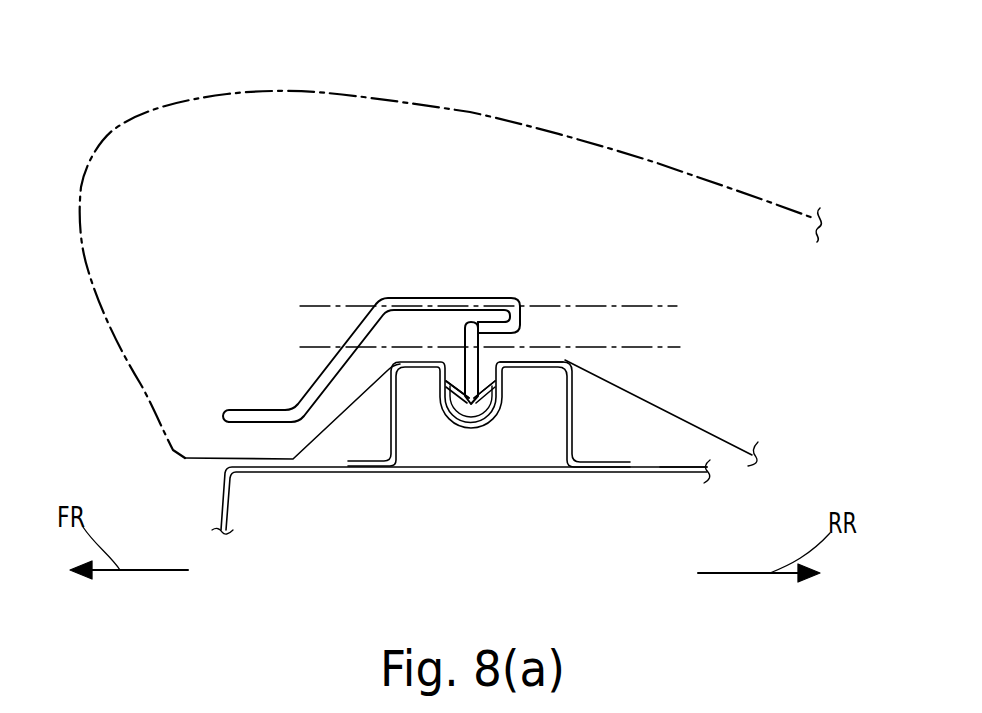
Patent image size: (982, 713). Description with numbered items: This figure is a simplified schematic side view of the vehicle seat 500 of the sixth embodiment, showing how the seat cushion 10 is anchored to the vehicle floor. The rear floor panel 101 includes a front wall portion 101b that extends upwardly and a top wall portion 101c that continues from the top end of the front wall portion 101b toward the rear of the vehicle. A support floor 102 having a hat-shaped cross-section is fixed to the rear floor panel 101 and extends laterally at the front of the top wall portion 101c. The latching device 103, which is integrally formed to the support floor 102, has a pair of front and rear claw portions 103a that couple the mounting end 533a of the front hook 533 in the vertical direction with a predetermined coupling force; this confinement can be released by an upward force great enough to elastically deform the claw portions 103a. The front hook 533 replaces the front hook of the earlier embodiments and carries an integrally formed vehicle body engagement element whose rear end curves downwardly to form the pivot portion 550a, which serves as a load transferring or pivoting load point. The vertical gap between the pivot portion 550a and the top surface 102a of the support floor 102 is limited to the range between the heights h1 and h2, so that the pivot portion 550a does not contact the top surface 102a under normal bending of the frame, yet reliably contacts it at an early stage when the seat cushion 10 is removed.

The seat cushion 10 is at (473, 108).
The vehicle seat 500 is at (657, 138).
The pivot portion 550a is at (523, 326).
The front hook 533 is at (308, 368).
The mounting end 533a is at (463, 406).
The height h1 is at (673, 347).
The height h2 is at (642, 306).
The rear floor panel 101 is at (687, 456).
The front wall portion 101b is at (222, 507).
The top wall portion 101c is at (670, 466).
The support floor 102 is at (385, 430).
The top surface 102a is at (568, 358).
The latching device 103 is at (502, 440).
The claw portions 103a is at (500, 406).